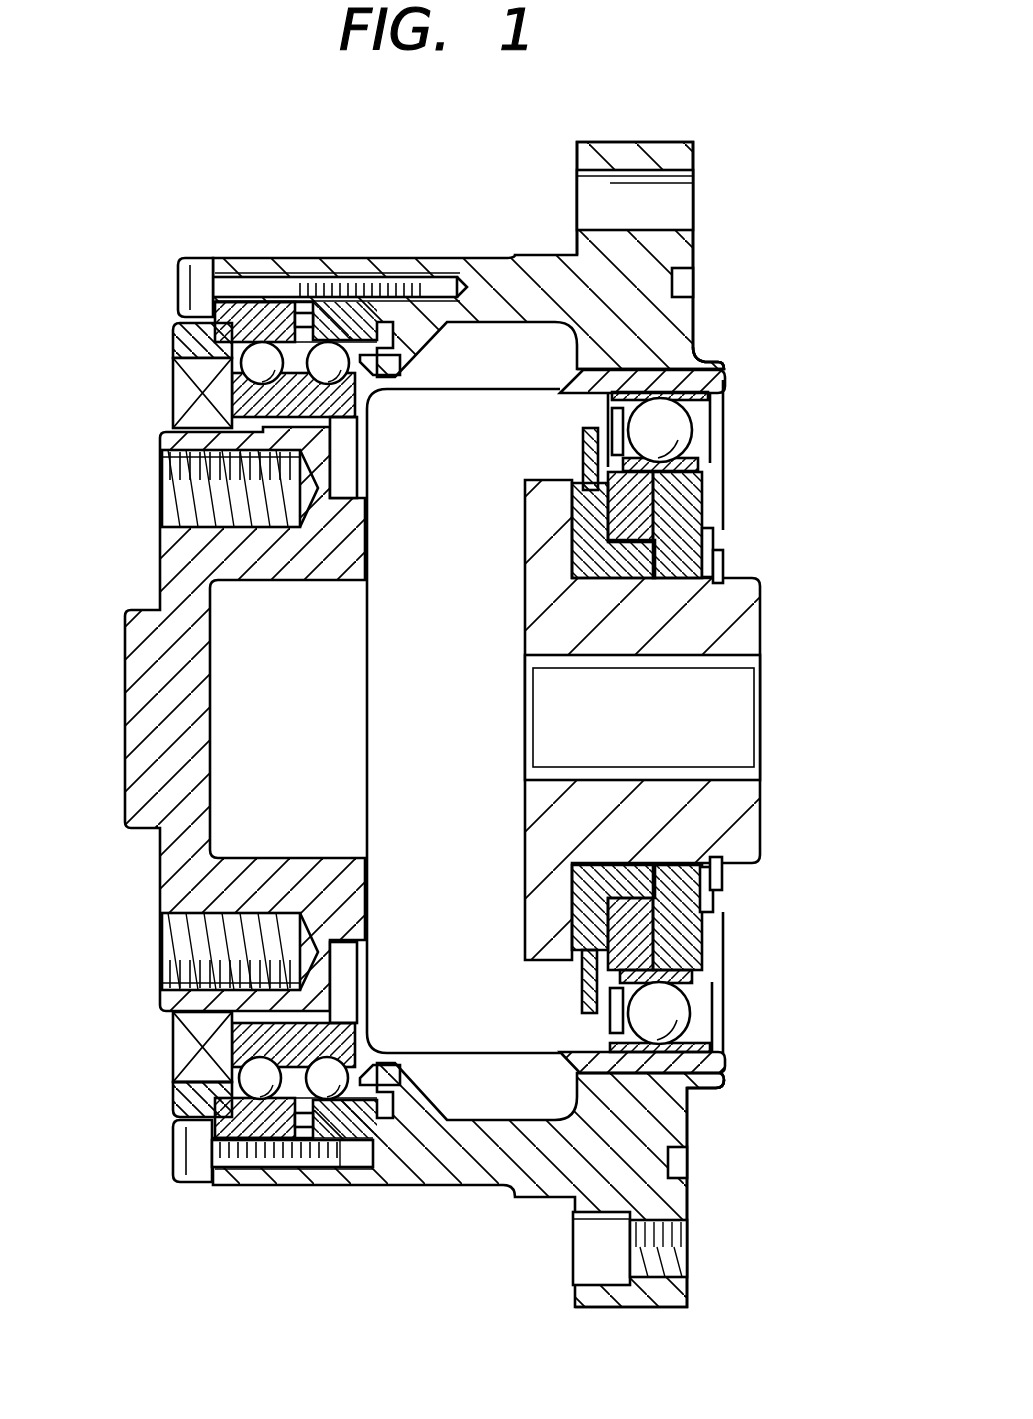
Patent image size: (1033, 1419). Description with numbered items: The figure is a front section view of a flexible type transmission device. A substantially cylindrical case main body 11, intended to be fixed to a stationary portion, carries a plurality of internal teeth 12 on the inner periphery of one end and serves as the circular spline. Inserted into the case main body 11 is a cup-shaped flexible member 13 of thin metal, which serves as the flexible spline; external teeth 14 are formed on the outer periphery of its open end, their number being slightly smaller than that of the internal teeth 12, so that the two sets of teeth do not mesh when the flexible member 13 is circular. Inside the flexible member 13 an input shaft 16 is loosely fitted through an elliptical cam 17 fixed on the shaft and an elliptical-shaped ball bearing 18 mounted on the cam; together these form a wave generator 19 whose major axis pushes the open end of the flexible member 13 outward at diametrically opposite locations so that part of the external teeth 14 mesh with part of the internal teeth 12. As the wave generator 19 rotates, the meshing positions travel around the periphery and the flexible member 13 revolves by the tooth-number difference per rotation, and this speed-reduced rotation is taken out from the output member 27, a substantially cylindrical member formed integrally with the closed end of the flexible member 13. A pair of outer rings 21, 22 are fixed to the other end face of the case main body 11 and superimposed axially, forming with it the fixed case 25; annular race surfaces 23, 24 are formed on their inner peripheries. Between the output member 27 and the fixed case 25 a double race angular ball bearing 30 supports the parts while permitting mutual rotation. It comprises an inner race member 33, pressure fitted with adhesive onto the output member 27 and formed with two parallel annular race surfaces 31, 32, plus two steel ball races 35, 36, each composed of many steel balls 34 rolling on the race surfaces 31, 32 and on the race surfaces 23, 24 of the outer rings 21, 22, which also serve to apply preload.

The case main body 11 is at (660, 250).
The internal teeth 12 is at (688, 372).
The flexible member 13 is at (449, 394).
The external teeth 14 is at (655, 368).
The input shaft 16 is at (742, 614).
The elliptical cam 17 is at (685, 490).
The elliptical-shaped ball bearing 18 is at (680, 425).
The wave generator 19 is at (735, 552).
The outer ring 21 is at (262, 262).
The outer ring 22 is at (360, 270).
The race surface 23 is at (228, 350).
The race surface 24 is at (338, 352).
The fixed case 25 is at (437, 255).
The output member 27 is at (345, 545).
The double race angular ball bearing 30 is at (210, 1034).
The annular race surface 31 is at (228, 1072).
The annular race surface 32 is at (352, 1047).
The inner race member 33 is at (367, 1003).
The steel balls 34 is at (240, 370).
The steel ball race 35 is at (238, 1097).
The steel ball race 36 is at (328, 1108).